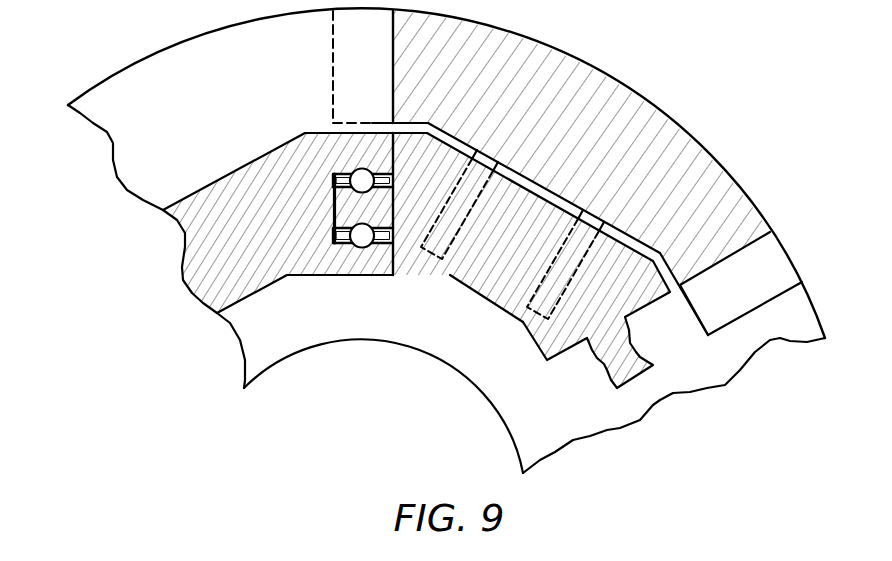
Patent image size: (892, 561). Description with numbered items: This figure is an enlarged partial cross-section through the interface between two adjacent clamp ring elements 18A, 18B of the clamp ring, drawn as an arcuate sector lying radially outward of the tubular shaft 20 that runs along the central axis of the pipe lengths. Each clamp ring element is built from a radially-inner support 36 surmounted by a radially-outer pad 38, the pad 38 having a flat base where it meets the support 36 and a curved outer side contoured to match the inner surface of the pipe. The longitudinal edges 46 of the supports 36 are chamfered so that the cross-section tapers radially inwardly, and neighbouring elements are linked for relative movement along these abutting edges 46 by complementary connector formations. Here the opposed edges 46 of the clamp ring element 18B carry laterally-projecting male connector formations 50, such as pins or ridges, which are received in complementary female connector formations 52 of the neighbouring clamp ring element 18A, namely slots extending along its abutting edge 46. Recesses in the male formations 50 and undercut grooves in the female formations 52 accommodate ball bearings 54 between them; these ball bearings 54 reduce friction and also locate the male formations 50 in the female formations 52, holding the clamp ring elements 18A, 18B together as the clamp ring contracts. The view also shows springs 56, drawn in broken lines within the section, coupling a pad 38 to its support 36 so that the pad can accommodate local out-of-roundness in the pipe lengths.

The clamp ring element 18A is at (282, 163).
The clamp ring element 18B is at (482, 308).
The shaft 20 is at (296, 352).
The support 36 is at (475, 283).
The pad 38 is at (612, 85).
The longitudinal edge 46 is at (390, 250).
The male connector formation 50 is at (334, 210).
The female connector formation 52 is at (338, 173).
The ball bearing 54 is at (361, 170).
The spring 56 is at (394, 163).